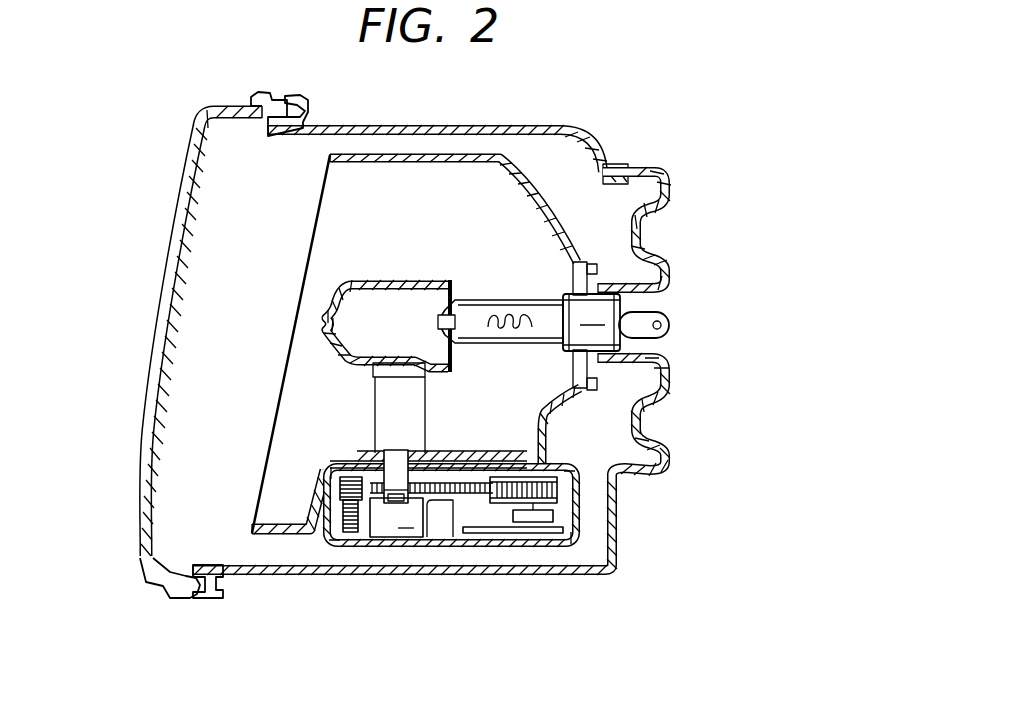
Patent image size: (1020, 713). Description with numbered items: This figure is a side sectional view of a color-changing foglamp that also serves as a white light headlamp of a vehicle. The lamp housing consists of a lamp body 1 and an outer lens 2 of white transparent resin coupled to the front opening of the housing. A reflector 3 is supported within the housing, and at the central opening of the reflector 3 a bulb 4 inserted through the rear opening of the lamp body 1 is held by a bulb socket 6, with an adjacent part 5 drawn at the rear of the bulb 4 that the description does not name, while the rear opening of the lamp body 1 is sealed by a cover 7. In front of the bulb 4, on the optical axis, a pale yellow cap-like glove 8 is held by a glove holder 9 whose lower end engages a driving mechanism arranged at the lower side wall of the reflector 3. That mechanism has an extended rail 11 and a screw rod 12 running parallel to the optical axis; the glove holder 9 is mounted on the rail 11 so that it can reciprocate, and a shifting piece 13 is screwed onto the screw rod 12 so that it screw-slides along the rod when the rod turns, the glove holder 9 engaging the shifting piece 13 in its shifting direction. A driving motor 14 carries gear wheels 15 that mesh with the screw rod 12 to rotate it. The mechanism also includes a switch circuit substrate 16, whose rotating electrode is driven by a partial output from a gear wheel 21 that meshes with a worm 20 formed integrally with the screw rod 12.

The lamp body 1 is at (585, 133).
The outer lens 2 is at (141, 410).
The reflector 3 is at (547, 197).
The bulb 4 is at (483, 313).
The lamp socket 5 is at (598, 308).
The bulb socket 6 is at (643, 233).
The cover 7 is at (663, 388).
The cap-like glove 8 is at (345, 288).
The glove holder 9 is at (383, 392).
The rail 11 is at (490, 453).
The screw rod 12 is at (453, 500).
The shifting piece 13 is at (393, 463).
The driving motor 14 is at (390, 527).
The gear wheels 15 is at (345, 530).
The switch circuit substrate 16 is at (523, 515).
The worm 20 is at (500, 503).
The gear wheel 21 is at (557, 533).